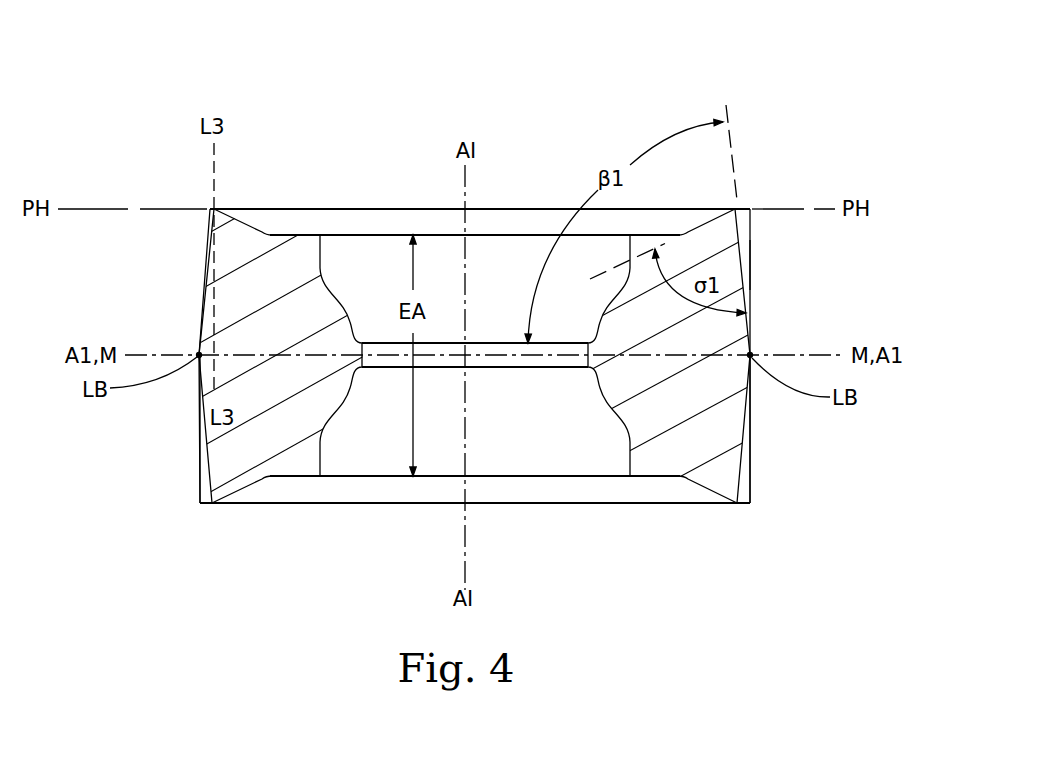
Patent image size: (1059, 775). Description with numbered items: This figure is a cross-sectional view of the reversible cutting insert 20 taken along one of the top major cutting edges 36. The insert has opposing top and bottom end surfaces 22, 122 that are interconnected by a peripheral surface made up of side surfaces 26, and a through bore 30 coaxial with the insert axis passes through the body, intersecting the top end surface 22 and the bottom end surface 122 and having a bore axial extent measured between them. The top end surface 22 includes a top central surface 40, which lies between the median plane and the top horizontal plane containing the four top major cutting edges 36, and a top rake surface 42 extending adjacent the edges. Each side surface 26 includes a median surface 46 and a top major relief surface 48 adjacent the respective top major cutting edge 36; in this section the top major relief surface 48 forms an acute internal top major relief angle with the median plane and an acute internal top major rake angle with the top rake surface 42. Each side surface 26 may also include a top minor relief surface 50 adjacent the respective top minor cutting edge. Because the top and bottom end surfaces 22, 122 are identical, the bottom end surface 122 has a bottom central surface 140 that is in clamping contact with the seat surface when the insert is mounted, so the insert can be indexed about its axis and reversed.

The cutting insert 20 is at (628, 95).
The top end surface 22 is at (372, 235).
The side surface 26 is at (200, 388).
The through bore 30 is at (545, 445).
The top major cutting edge 36 is at (213, 208).
The top central surface 40 is at (300, 235).
The top rake surface 42 is at (696, 227).
The median surface 46 is at (199, 335).
The top major relief surface 48 is at (210, 240).
The top minor relief surface 50 is at (751, 265).
The bottom end surface 122 is at (398, 476).
The bottom central surface 140 is at (297, 476).